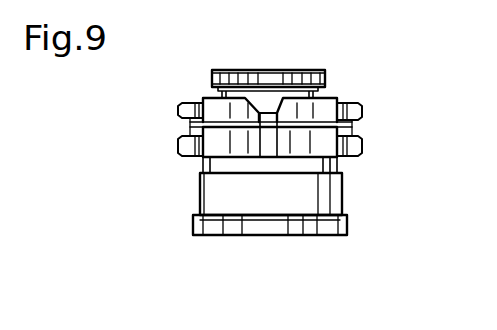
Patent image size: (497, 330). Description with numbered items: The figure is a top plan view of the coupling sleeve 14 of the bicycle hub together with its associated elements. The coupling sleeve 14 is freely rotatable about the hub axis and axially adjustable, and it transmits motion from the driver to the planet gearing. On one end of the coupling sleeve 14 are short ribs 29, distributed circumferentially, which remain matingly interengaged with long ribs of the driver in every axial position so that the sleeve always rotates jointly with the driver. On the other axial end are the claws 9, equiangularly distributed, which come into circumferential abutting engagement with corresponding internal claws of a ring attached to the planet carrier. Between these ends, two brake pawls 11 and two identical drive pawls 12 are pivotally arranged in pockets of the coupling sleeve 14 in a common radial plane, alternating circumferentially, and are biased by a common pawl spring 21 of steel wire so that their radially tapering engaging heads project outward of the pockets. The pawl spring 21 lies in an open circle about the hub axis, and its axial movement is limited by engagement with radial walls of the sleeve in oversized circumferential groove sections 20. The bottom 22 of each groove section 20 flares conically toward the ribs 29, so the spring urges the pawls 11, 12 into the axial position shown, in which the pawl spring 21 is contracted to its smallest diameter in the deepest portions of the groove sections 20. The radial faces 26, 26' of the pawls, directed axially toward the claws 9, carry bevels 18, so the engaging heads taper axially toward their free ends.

The claws 9 is at (305, 82).
The bevels 18 is at (286, 115).
The radial face 26' is at (215, 88).
The radial face 26 is at (321, 88).
The bottom of groove section 22 is at (187, 134).
The pawl spring 21 is at (357, 105).
The groove sections 20 is at (356, 131).
The drive pawls 12 is at (204, 162).
The brake pawls 11 is at (338, 167).
The short ribs 29 is at (236, 236).
The coupling sleeve 14 is at (289, 236).